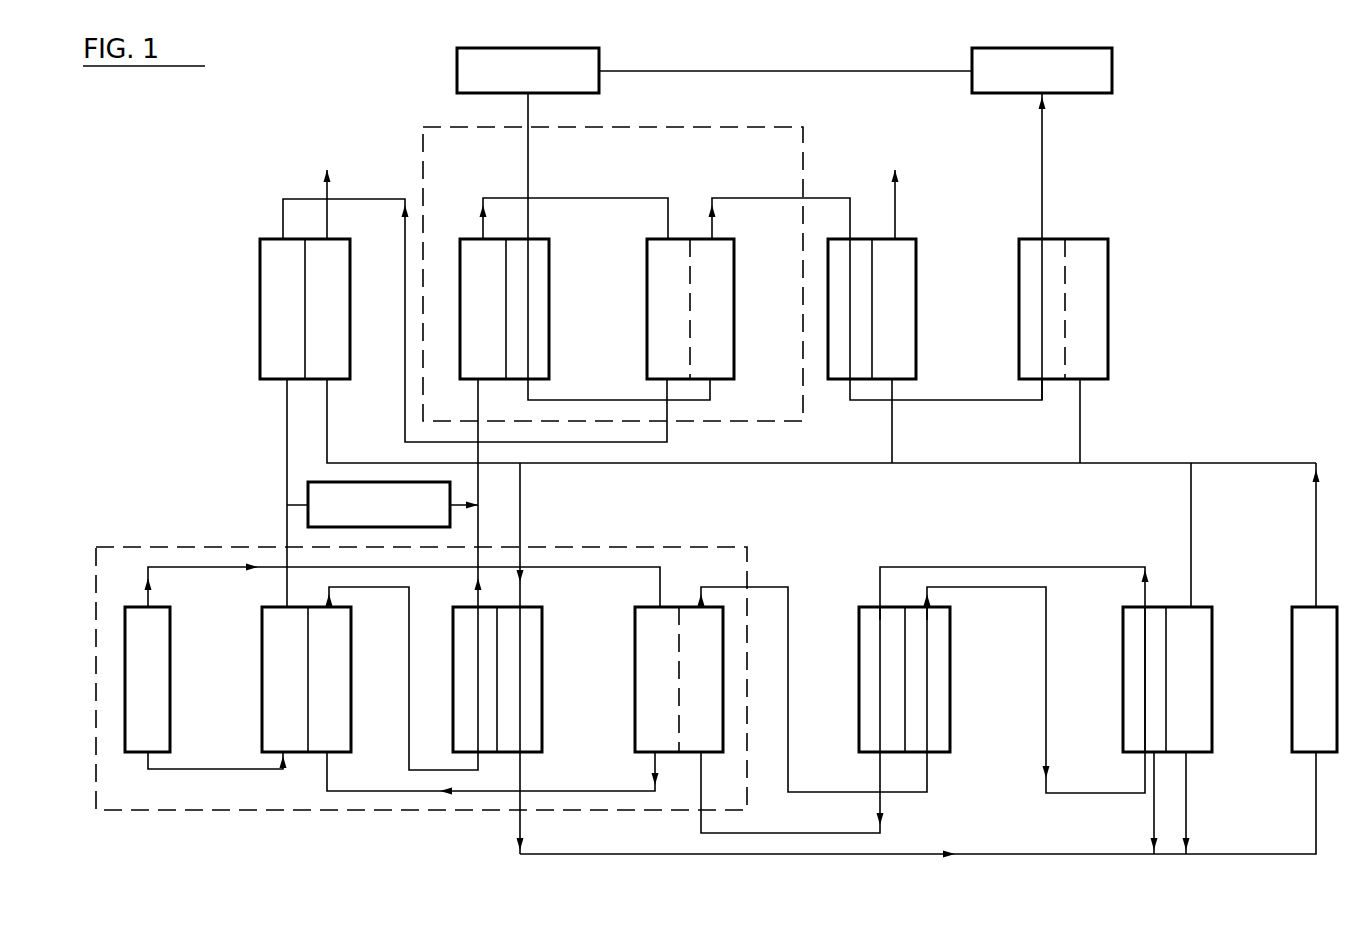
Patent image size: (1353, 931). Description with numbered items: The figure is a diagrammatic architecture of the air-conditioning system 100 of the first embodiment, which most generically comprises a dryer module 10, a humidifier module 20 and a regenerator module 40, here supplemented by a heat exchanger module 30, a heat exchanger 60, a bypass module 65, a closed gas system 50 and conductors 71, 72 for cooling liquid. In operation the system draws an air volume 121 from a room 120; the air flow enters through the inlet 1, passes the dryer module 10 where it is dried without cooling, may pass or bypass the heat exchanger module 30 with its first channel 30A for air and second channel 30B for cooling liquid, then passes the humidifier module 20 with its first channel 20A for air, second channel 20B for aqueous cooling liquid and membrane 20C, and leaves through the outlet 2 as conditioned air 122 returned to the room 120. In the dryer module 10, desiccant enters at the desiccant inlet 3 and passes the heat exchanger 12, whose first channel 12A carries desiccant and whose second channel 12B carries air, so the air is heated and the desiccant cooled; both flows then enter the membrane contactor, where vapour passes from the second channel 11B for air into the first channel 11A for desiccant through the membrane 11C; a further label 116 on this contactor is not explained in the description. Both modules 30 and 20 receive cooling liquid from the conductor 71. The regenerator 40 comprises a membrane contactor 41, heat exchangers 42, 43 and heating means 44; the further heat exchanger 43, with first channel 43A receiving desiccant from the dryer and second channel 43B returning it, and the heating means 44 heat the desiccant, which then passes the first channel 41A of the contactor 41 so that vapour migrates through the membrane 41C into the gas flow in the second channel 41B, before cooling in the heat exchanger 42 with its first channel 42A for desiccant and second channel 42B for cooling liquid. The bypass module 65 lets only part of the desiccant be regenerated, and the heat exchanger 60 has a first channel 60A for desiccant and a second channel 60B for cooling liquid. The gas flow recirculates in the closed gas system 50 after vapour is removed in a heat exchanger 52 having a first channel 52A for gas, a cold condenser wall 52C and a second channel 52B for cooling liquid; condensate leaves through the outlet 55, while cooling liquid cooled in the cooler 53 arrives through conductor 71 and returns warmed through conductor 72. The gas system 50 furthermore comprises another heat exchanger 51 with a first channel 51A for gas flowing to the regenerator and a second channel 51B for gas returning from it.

The air-conditioning system 100 is at (402, 106).
The room 120 is at (630, 71).
The air to be drawn from room 121 is at (528, 70).
The conditioned air 122 is at (1042, 70).
The inlet 1 is at (527, 107).
The outlet 2 is at (1040, 125).
The desiccant inlet 3 is at (478, 450).
The dryer module 10 is at (700, 127).
The heat exchanger 12 is at (520, 240).
The first channel for desiccant flow 12A is at (460, 265).
The second channel for air flow 12B is at (549, 265).
The first channel for desiccant flow 11A is at (645, 297).
The second channel for air flow 11B is at (735, 243).
The membrane 11C is at (691, 237).
The electrolyzer housing 116 is at (735, 340).
The heat exchanger 60 is at (262, 285).
The first channel for desiccant flow 60A is at (275, 240).
The second channel for cooling liquid flow 60B is at (352, 250).
The bypass module 65 is at (382, 504).
The heat exchanger module 30 is at (862, 240).
The first channel for air flow 30A is at (834, 372).
The second channel for cooling liquid flow 30B is at (917, 245).
The humidifier module 20 is at (1075, 240).
The first channel for air flow 20A is at (1030, 312).
The second channel for aqueous cooling liquid flow 20B is at (1107, 282).
The membrane 20C is at (1060, 383).
The conductor of cold cooling liquid 71 is at (1236, 463).
The conductor of warmed-up cooling liquid 72 is at (1000, 854).
The regenerator module 40 is at (120, 545).
The membrane contactor 41 is at (690, 752).
The first channel for desiccant flow 41A is at (636, 687).
The second channel for gas flow 41B is at (715, 620).
The membrane 41C is at (680, 598).
The heat exchanger 42 is at (530, 745).
The first channel for desiccant flow 42A is at (458, 610).
The second channel for cooling liquid flow 42B is at (535, 612).
The further heat exchanger 43 is at (315, 745).
The first channel for desiccant flow arriving from dryer module 43A is at (262, 680).
The second channel for desiccant flow leaving to dryer module 43B is at (351, 643).
The heating means 44 is at (137, 735).
The closed gas system 50 is at (985, 563).
The further heat exchanger 51 is at (912, 755).
The first channel for gas flow to regenerator 51A is at (866, 612).
The second channel for gas flow from regenerator 51B is at (915, 612).
The heat exchanger 52 is at (1200, 607).
The first channel for gas flow 52A is at (1123, 712).
The second channel for cooling liquid flow 52B is at (1200, 752).
The cold (condenser) wall 52C is at (1170, 607).
The cooling means 53 is at (1260, 730).
The outlet for condensed water vapour 55 is at (1152, 808).